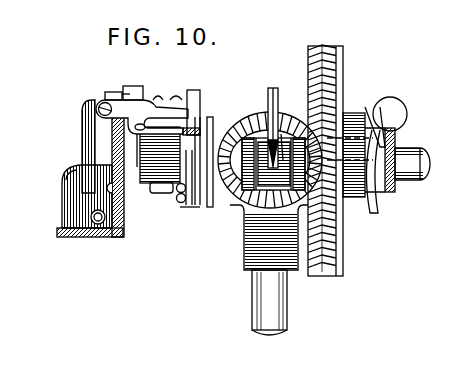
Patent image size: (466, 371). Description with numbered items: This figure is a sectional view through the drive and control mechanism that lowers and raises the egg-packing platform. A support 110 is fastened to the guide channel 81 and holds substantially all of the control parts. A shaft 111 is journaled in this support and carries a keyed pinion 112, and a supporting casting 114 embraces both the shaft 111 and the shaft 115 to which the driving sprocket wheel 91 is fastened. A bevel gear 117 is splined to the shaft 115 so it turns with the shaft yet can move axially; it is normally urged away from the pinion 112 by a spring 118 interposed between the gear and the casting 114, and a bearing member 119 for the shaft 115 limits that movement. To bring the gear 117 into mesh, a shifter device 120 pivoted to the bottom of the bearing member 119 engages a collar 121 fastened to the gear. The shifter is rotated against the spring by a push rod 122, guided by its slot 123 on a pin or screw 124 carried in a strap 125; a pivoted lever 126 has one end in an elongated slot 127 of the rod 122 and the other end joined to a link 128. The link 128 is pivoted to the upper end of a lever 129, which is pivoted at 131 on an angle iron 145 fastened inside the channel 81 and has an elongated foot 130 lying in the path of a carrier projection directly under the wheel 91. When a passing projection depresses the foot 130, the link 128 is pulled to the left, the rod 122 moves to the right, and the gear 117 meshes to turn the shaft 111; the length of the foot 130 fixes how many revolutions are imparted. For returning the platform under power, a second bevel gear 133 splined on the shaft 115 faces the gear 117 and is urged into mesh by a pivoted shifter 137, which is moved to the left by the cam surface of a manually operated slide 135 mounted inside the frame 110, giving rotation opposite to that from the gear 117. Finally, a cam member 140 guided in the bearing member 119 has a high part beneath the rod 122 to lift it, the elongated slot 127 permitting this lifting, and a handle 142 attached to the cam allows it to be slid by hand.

The channel 81 is at (111, 238).
The sprocket wheel 91 is at (83, 120).
The support 110 is at (393, 188).
The shaft 111 is at (281, 133).
The pinion 112 is at (259, 118).
The supporting casting 114 is at (268, 92).
The shaft 115 is at (422, 147).
The bevel gear 117 is at (236, 123).
The spring 118 is at (238, 130).
The bearing member 119 is at (163, 196).
The shifter device 120 is at (192, 203).
The collar 121 is at (210, 117).
The push rod 122 is at (220, 128).
The slot 123 is at (120, 96).
The pin or screw 124 is at (137, 86).
The strap 125 is at (128, 92).
The pivoted lever 126 is at (183, 90).
The elongated slot 127 is at (160, 94).
The link 128 is at (142, 117).
The lever 129 is at (102, 138).
The elongated foot 130 is at (58, 214).
The pivot 131 is at (96, 226).
The second bevel gear 133 is at (343, 224).
The slide 135 is at (400, 107).
The pivoted shifter 137 is at (377, 205).
The cam member 140 is at (229, 244).
The handle 142 is at (175, 172).
The angle iron 145 is at (74, 167).